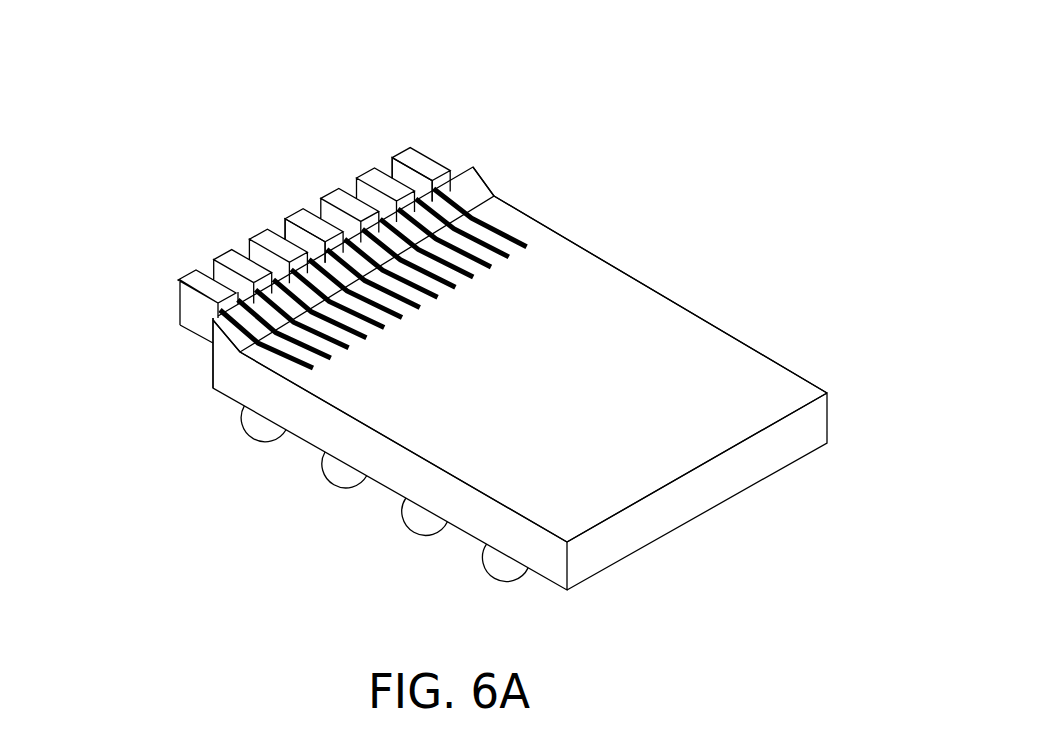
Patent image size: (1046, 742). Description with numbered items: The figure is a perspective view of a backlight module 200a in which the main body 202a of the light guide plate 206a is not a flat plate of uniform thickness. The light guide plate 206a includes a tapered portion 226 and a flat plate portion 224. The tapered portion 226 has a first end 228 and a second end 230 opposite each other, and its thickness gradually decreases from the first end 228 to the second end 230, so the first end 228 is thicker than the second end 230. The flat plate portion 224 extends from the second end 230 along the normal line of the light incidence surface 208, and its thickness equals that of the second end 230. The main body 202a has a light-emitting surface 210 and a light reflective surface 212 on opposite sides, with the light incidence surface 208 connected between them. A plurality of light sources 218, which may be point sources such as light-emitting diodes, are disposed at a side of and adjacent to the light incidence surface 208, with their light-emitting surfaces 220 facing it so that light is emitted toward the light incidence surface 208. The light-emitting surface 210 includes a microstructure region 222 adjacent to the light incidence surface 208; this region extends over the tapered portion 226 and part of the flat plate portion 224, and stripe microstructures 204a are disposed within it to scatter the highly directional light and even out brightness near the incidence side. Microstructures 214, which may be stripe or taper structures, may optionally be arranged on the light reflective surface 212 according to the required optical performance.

The backlight module 200a is at (203, 154).
The main body 202a is at (680, 143).
The stripe microstructures 204a is at (476, 192).
The light guide plate 206a is at (640, 80).
The light incidence surface 208 is at (316, 237).
The light-emitting surface 210 is at (713, 382).
The light reflective surface 212 is at (372, 498).
The microstructures 214 is at (513, 588).
The light sources 218 is at (185, 307).
The light-emitting surfaces 220 is at (213, 343).
The microstructure region 222 is at (266, 374).
The flat plate portion 224 is at (675, 333).
The tapered portion 226 is at (500, 214).
The first end 228 is at (400, 198).
The second end 230 is at (236, 352).